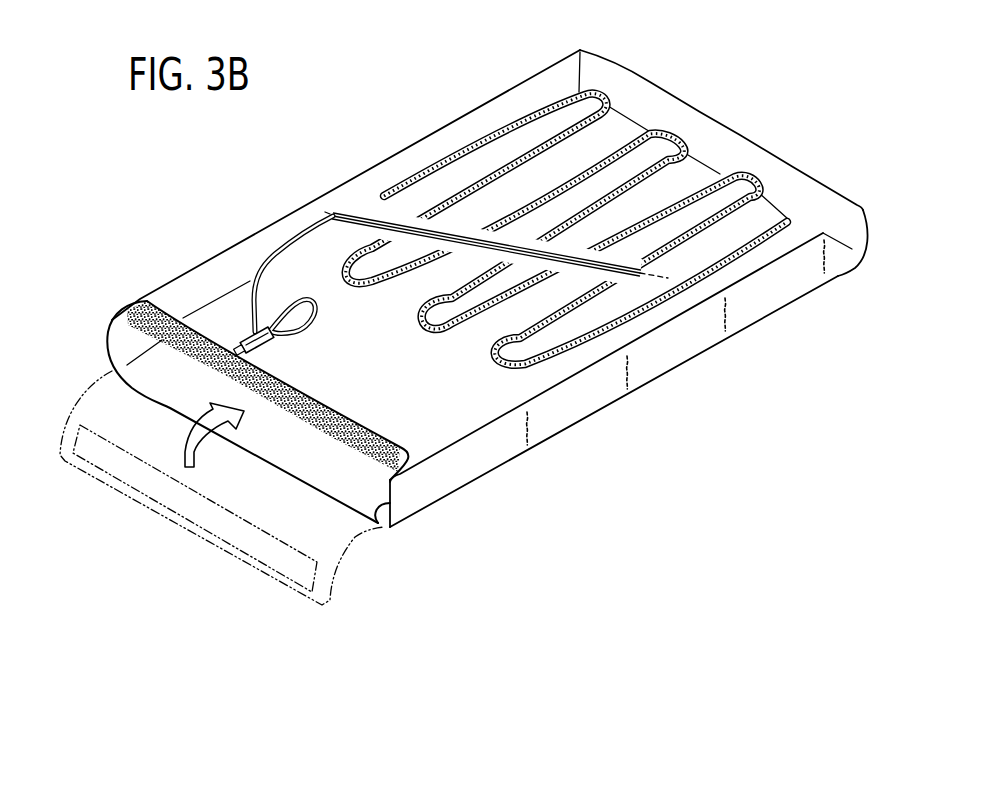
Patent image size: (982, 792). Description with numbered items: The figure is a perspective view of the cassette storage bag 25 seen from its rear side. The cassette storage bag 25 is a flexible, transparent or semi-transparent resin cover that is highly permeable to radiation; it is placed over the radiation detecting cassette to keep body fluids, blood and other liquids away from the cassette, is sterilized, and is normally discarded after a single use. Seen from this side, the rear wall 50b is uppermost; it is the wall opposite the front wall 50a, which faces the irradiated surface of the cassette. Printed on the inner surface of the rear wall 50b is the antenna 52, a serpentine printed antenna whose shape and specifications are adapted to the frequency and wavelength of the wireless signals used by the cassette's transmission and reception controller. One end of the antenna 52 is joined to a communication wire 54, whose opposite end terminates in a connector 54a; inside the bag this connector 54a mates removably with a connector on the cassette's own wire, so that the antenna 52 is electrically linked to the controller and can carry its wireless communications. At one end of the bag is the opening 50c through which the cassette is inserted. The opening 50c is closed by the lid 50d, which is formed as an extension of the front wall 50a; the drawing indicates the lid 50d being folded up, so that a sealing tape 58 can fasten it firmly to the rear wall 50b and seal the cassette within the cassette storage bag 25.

The cassette storage bag 25 is at (797, 84).
The front wall 50a is at (578, 418).
The rear wall 50b is at (256, 248).
The opening 50c is at (386, 528).
The lid 50d is at (282, 452).
The antenna 52 is at (415, 180).
The communication wire 54 is at (298, 334).
The connector 54a is at (244, 338).
The sealing tape 58 is at (368, 430).